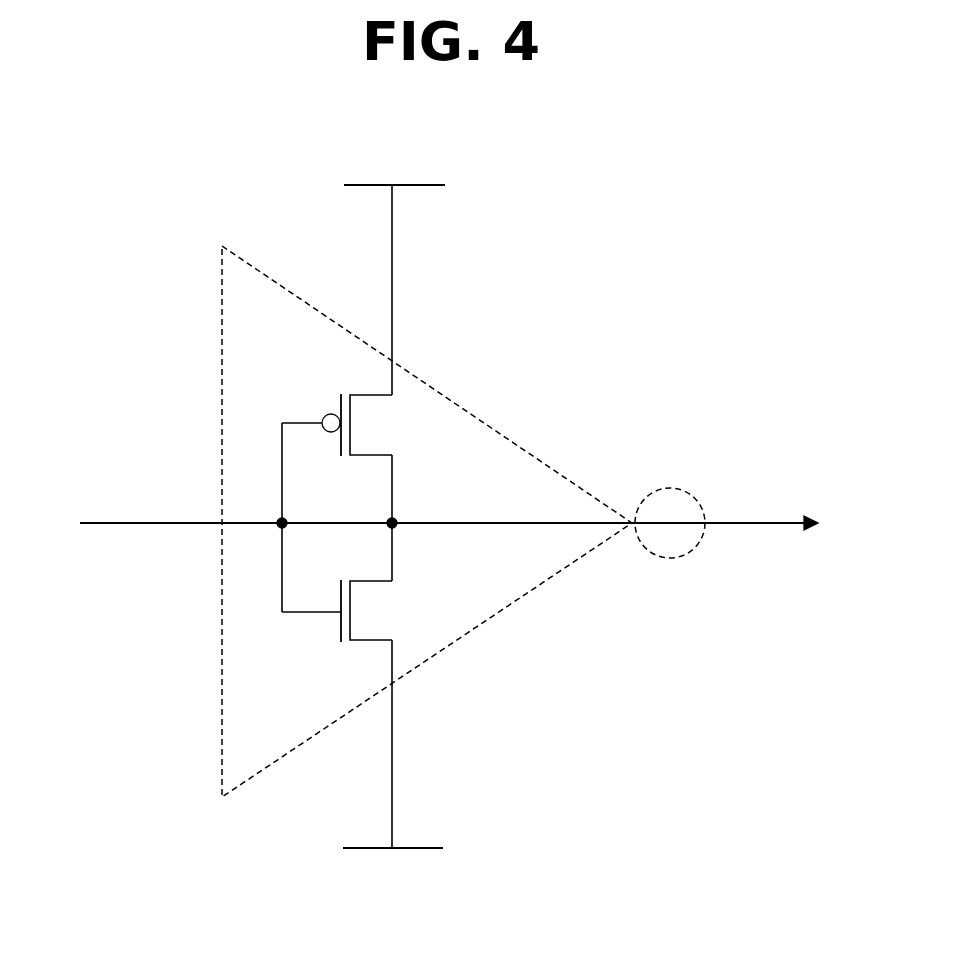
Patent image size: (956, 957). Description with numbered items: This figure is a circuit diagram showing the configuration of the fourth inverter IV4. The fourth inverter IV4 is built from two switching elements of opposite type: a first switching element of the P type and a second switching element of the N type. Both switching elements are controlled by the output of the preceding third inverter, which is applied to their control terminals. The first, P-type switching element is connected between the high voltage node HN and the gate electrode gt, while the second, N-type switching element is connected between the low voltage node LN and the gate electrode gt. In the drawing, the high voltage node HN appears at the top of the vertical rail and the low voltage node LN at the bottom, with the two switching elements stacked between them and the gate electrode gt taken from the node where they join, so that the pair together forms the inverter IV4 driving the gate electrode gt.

The fourth inverter IV4 is at (427, 521).
The high voltage node HN is at (394, 167).
The low voltage node LN is at (393, 863).
The gate electrode gt is at (449, 535).